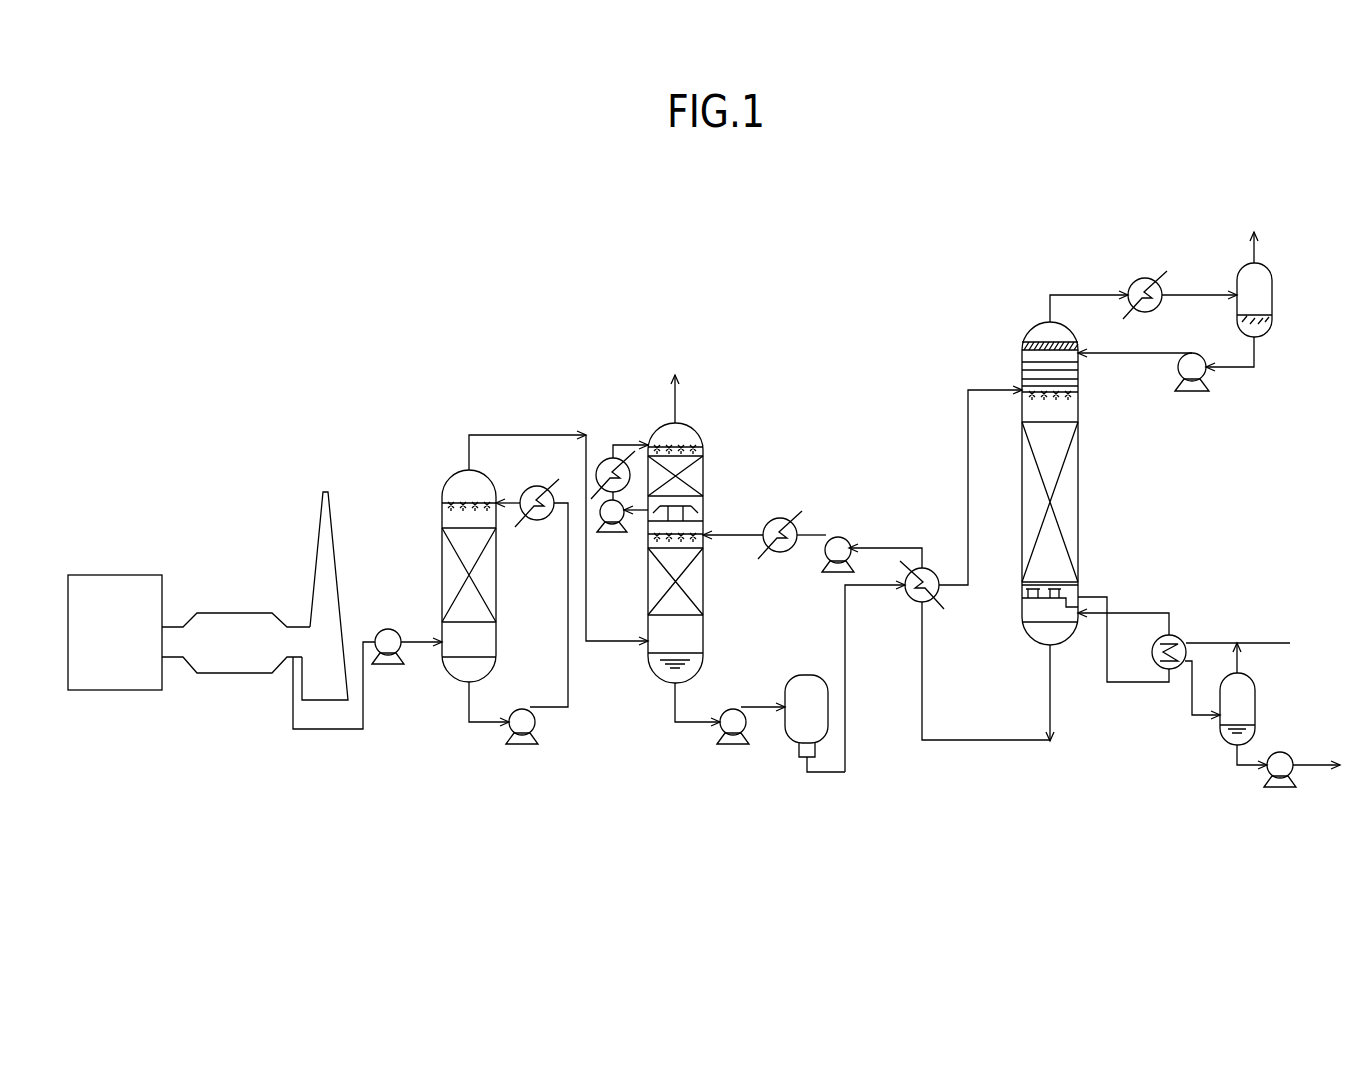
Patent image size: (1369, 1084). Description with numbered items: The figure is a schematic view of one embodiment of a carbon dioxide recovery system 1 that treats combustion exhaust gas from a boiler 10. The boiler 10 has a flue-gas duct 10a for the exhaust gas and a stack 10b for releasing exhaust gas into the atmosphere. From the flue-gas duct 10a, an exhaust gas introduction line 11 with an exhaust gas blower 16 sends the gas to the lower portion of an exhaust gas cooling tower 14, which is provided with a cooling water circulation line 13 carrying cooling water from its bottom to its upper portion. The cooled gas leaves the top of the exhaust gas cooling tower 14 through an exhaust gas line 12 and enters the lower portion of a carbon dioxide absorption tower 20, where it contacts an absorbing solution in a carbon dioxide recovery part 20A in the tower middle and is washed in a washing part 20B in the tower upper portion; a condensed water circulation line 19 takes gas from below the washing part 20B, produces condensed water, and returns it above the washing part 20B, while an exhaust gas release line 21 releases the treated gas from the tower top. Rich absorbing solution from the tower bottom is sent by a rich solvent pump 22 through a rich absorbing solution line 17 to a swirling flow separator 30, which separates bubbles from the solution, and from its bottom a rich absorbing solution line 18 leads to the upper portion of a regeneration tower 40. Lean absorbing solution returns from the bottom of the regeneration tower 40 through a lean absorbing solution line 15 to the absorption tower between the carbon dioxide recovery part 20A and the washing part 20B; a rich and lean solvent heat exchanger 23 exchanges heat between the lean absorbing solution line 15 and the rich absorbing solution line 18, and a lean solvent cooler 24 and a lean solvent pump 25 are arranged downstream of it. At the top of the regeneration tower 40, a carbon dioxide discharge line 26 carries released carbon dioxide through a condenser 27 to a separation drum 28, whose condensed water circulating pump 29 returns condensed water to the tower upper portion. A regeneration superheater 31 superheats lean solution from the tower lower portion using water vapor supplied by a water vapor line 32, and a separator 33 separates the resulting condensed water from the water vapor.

The carbon dioxide recovery system 1 is at (567, 258).
The boiler 10 is at (120, 575).
The flue-gas duct 10a is at (232, 675).
The stack 10b is at (315, 530).
The exhaust gas introduction line 11 is at (363, 713).
The exhaust gas line 12 is at (513, 435).
The cooling water circulation line 13 is at (520, 745).
The exhaust gas cooling tower 14 is at (442, 484).
The lean absorbing solution line 15 is at (740, 533).
The exhaust gas blower 16 is at (388, 628).
The rich absorbing solution line 17 is at (672, 707).
The rich absorbing solution line 18 is at (968, 417).
The condensed water circulation line 19 is at (622, 447).
The carbon dioxide absorption tower 20 is at (690, 418).
The carbon dioxide recovery part 20A is at (692, 590).
The washing part 20B is at (694, 475).
The exhaust gas release line 21 is at (672, 402).
The rich solvent pump 22 is at (730, 745).
The rich and lean solvent heat exchanger 23 is at (912, 605).
The lean solvent cooler 24 is at (800, 522).
The lean solvent pump 25 is at (852, 532).
The carbon dioxide discharge line 26 is at (1082, 295).
The condenser 27 is at (1140, 278).
The separation drum 28 is at (1243, 263).
The condensed water circulating pump 29 is at (1193, 392).
The swirling flow separator 30 is at (780, 745).
The regeneration superheater 31 is at (1178, 632).
The water vapor line 32 is at (1268, 640).
The separator 33 is at (1257, 698).
The regeneration tower 40 is at (1035, 318).